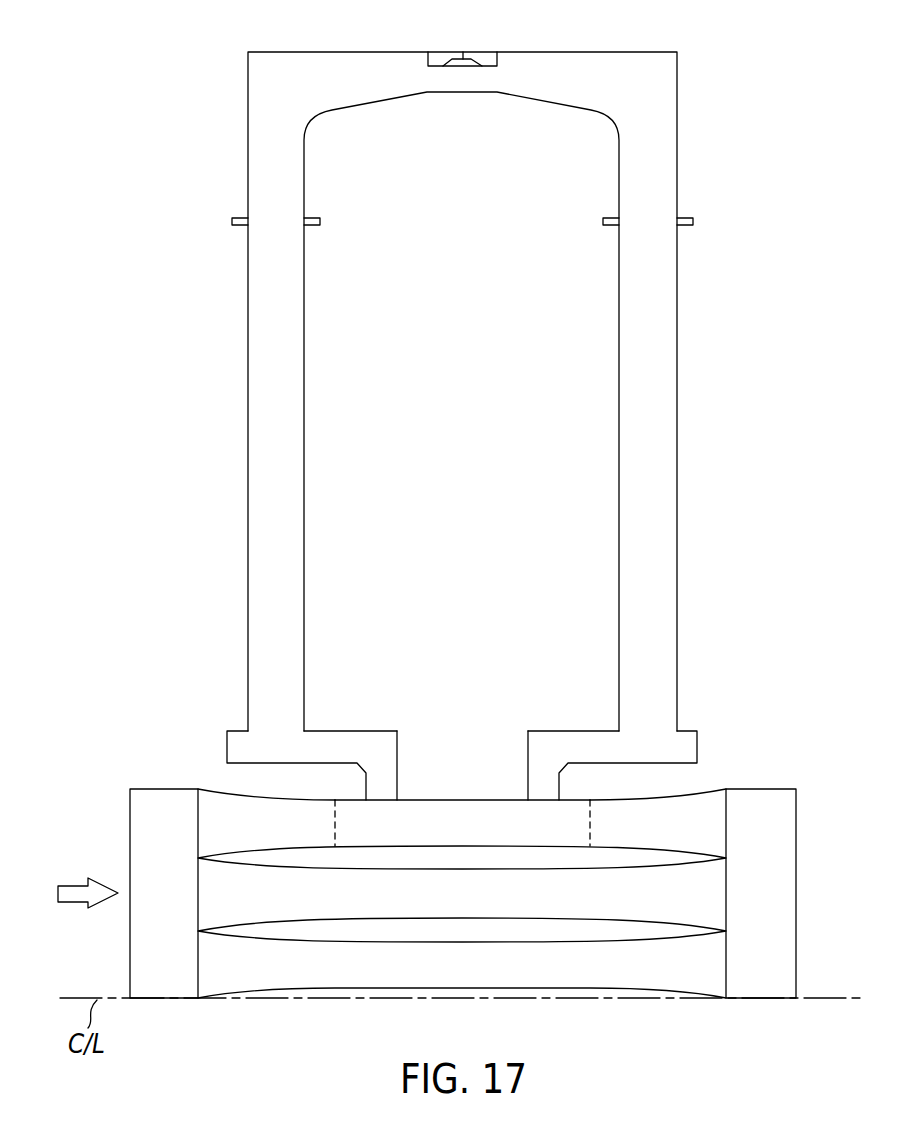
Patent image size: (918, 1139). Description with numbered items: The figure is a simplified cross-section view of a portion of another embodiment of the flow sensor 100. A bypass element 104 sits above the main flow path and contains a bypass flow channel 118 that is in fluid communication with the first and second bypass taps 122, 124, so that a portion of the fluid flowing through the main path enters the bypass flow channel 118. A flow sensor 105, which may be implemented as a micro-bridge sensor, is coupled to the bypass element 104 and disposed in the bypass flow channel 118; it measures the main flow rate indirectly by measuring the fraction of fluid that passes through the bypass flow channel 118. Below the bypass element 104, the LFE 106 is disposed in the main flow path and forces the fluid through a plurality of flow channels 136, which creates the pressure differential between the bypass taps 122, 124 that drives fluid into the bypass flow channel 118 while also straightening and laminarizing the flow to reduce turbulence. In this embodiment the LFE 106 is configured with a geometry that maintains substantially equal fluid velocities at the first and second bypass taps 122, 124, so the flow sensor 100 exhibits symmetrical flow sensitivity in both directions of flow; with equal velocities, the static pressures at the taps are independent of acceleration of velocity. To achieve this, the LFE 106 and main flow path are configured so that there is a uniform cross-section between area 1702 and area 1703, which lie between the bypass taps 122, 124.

The flow sensor 100 is at (206, 137).
The bypass element 104 is at (700, 653).
The flow sensor 105 is at (460, 53).
The LFE 106 is at (94, 822).
The bypass flow channel 118 is at (373, 80).
The first bypass tap 122 is at (382, 788).
The second bypass tap 124 is at (543, 788).
The flow channels 136 is at (693, 808).
The area 1702 is at (330, 803).
The area 1703 is at (592, 803).